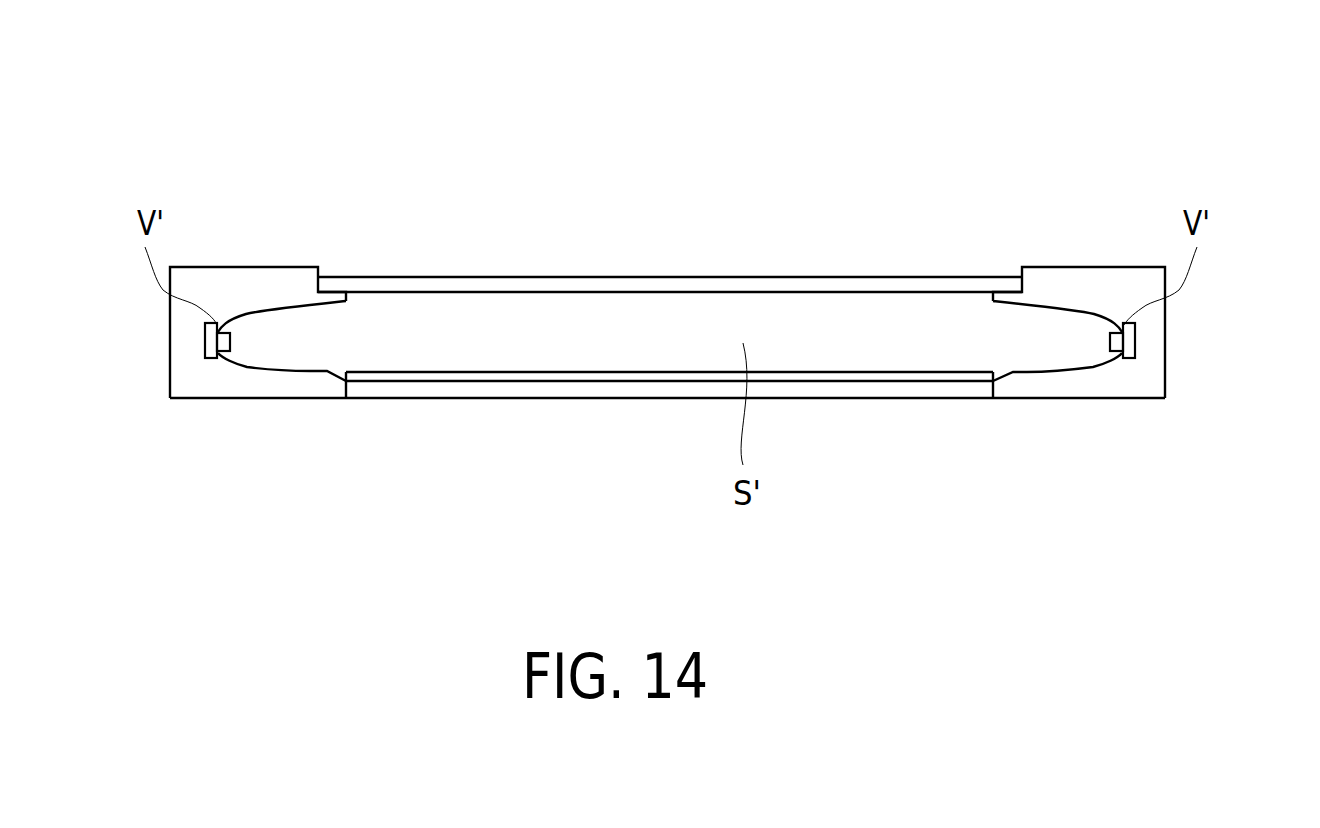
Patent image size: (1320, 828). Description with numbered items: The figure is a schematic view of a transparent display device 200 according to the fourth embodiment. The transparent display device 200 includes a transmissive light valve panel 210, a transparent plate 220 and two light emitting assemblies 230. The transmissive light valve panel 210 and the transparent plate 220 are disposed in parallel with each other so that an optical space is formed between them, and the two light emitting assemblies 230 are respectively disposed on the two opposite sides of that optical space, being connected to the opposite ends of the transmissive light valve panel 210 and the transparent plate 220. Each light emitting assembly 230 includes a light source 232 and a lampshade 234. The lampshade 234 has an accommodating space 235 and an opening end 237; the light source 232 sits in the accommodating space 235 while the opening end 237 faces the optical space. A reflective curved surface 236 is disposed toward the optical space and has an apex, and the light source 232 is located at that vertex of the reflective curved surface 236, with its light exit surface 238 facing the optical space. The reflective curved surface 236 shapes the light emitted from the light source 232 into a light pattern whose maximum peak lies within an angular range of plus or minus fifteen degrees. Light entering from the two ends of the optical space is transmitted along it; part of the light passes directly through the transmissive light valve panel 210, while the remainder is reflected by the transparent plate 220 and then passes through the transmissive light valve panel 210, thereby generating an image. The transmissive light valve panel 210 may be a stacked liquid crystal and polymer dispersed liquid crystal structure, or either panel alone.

The transparent display device 200 is at (1088, 87).
The transmissive light valve panel 210 is at (582, 405).
The transparent plate 220 is at (595, 287).
The light emitting assembly 230 is at (138, 327).
The light source 232 is at (207, 342).
The lampshade 234 is at (268, 283).
The accommodating space 235 is at (288, 342).
The reflective curved surface 236 is at (235, 318).
The opening end 237 is at (345, 342).
The light exit surface 238 is at (223, 357).